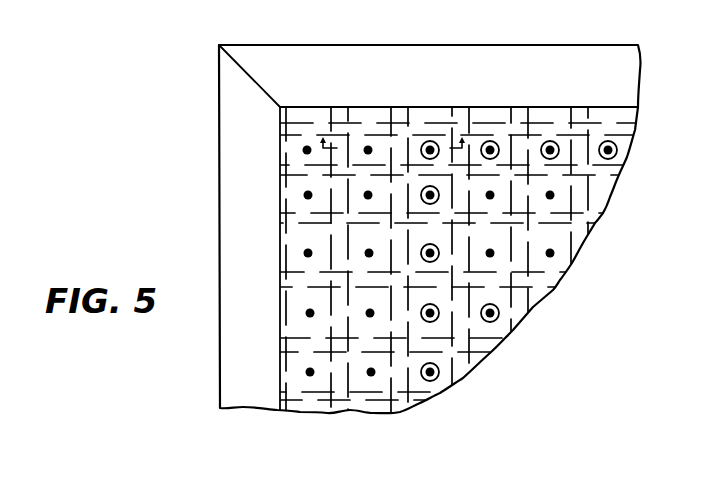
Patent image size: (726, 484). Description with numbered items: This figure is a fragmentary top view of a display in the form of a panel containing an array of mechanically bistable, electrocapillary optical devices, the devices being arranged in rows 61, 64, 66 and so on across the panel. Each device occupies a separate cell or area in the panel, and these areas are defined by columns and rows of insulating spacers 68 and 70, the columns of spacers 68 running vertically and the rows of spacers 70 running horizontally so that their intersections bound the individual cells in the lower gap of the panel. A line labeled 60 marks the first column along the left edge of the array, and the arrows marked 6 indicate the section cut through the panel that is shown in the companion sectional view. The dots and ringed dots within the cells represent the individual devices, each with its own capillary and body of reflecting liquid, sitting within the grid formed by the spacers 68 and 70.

The first filament line 60 is at (291, 143).
The insulating spacers (columns) 68 is at (341, 112).
The insulating spacers (rows) 70 is at (280, 168).
The row of devices 61 is at (306, 195).
The row of devices 64 is at (306, 253).
The row of devices 66 is at (308, 313).
The section line 6- 6 is at (390, 130).